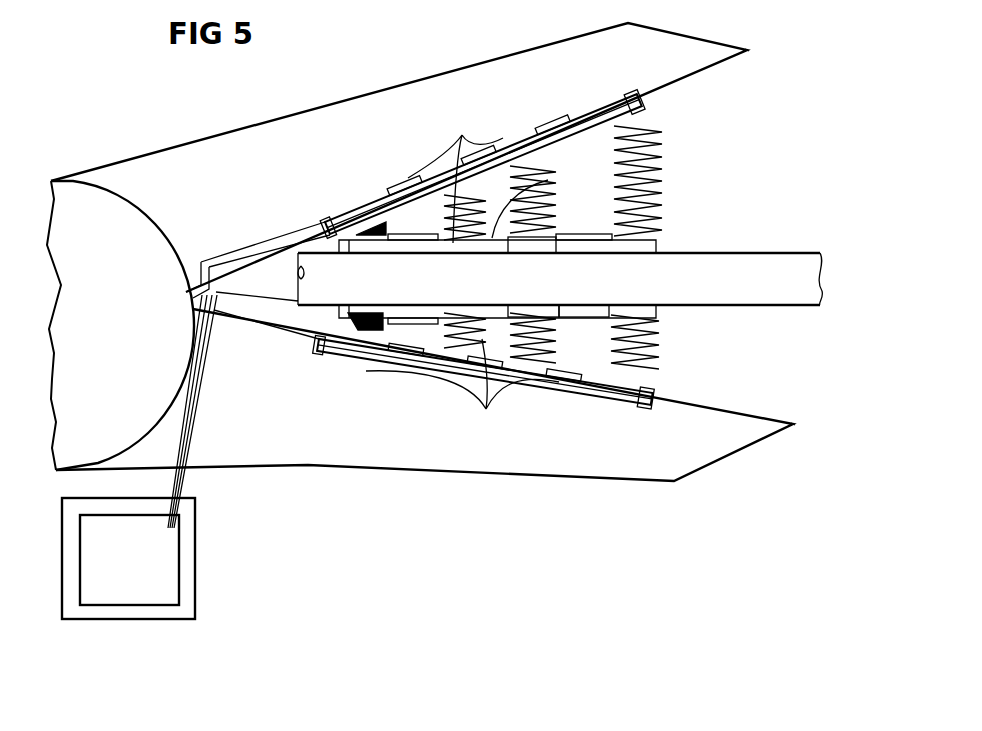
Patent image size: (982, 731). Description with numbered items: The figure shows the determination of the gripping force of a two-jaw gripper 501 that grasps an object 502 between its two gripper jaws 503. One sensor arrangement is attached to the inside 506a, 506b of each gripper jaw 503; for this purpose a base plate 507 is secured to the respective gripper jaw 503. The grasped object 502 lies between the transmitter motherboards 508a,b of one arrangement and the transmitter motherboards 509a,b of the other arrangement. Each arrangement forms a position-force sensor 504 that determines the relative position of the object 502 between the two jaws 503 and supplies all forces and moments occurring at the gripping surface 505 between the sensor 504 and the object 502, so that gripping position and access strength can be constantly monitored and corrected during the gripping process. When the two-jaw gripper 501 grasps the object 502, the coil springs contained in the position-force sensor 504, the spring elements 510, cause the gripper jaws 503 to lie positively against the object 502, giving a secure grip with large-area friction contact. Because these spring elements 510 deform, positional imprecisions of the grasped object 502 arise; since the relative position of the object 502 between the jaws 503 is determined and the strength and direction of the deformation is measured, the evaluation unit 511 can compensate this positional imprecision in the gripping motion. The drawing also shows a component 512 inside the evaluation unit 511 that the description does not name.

The two-jaw gripper 501 is at (89, 197).
The object 502 is at (783, 245).
The gripper jaws 503 is at (405, 82).
The position-force sensor 504 is at (395, 180).
The gripping surface 505 is at (655, 240).
The inside of the jaw 506a is at (718, 54).
The inside of the jaw 506b is at (720, 399).
The base plate 507 is at (622, 86).
The transmitter motherboards 508a,b is at (648, 241).
The transmitter motherboards 509a,b is at (650, 301).
The spring elements 510 is at (462, 274).
The evaluation unit 511 is at (182, 580).
The detector 512 is at (165, 547).